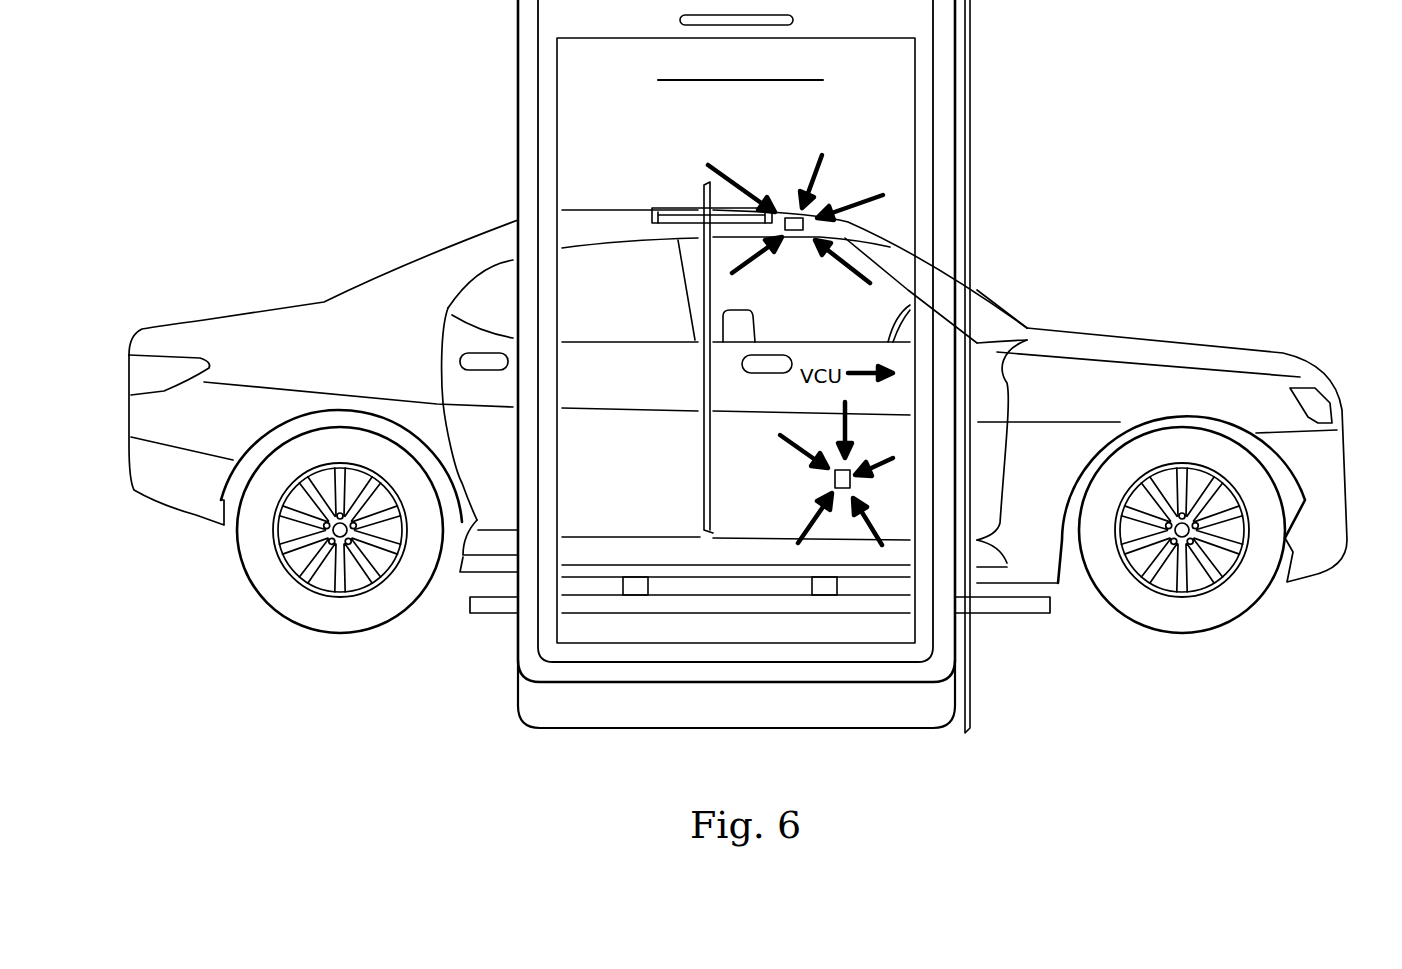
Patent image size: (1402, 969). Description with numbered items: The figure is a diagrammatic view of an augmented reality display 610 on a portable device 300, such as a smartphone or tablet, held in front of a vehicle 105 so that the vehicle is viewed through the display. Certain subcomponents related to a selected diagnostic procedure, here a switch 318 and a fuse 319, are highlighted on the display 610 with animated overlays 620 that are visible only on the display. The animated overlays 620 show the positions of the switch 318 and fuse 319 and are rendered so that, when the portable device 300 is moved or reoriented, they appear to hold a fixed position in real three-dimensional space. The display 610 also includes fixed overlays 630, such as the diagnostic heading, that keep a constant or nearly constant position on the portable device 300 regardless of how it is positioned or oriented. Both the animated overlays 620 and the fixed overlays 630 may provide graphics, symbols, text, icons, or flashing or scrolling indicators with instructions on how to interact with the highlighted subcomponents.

The vehicle 105 is at (1159, 332).
The portable device 300 is at (967, 146).
The switch 318 is at (793, 232).
The fuse 319 is at (835, 480).
The augmented reality display 610 is at (572, 117).
The animated overlays 620 is at (704, 438).
The fixed overlays 630 is at (745, 85).